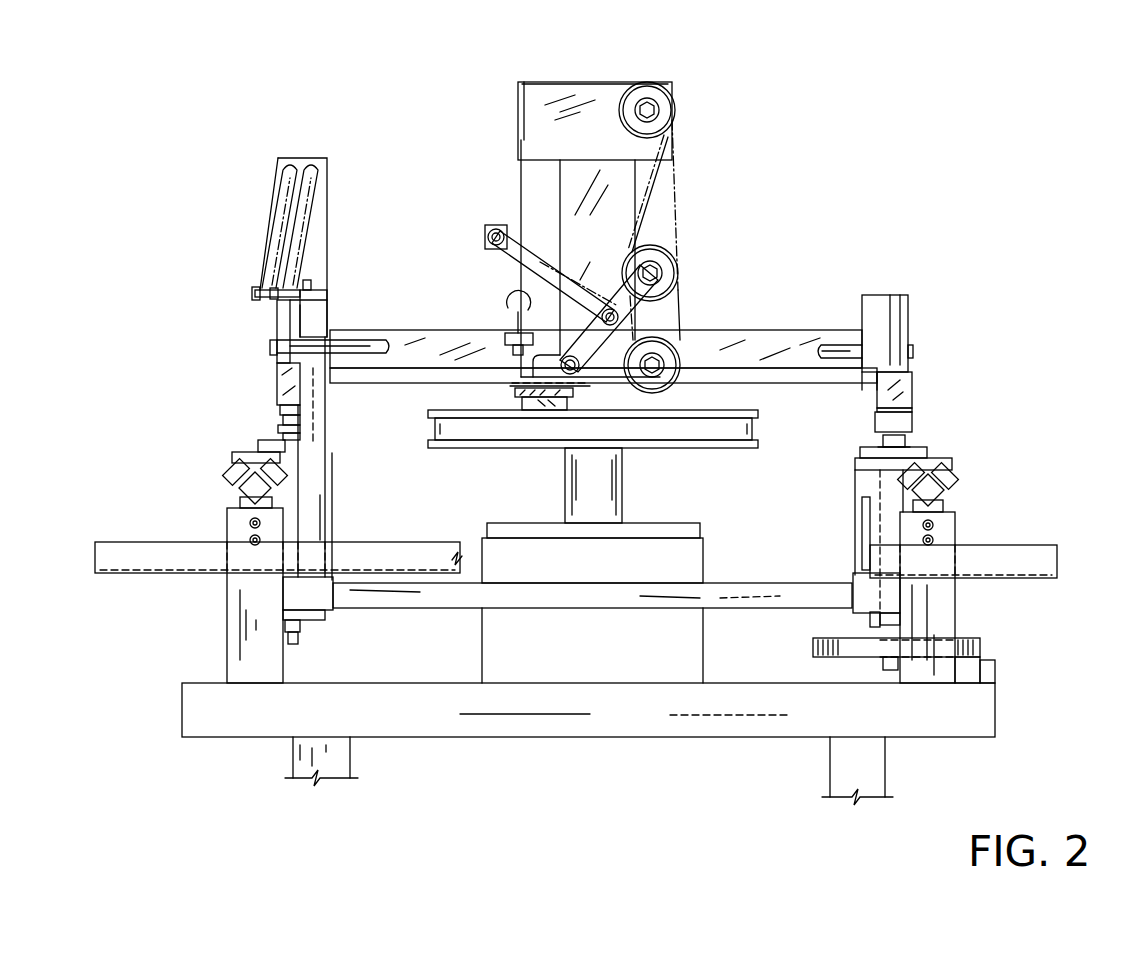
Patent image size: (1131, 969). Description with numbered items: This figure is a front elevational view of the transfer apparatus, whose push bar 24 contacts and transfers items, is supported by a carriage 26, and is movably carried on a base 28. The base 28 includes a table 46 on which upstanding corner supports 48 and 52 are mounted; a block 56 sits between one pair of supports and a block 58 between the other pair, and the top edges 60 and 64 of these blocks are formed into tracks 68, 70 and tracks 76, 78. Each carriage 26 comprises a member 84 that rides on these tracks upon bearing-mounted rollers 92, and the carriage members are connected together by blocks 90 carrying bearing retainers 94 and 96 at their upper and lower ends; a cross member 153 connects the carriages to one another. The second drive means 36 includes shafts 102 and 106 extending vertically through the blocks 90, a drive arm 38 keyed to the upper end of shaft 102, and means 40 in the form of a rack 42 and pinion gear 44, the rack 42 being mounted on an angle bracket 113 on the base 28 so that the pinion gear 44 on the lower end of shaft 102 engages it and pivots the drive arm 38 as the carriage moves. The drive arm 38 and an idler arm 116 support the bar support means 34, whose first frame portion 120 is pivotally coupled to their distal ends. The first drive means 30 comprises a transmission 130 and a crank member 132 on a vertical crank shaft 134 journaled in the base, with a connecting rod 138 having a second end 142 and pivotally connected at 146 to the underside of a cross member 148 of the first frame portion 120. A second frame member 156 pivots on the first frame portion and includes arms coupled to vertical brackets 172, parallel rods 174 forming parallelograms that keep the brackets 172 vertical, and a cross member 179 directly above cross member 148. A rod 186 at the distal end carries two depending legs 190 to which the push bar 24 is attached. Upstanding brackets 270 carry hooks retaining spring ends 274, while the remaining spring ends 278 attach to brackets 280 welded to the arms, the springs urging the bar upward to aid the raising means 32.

The push bar 24 is at (160, 563).
The carriage 26 is at (352, 500).
The base 28 is at (372, 670).
The first drive means 30 is at (660, 478).
The raising means 32 is at (700, 113).
The bar support means 34 is at (1070, 436).
The second drive means 36 is at (775, 549).
The drive arm 38 is at (880, 420).
The driving means 40 is at (785, 662).
The rack 42 is at (968, 648).
The pinion gear 44 is at (858, 655).
The table 46 is at (445, 683).
The corner support 48 is at (945, 530).
The corner support 52 is at (240, 638).
The block 56 is at (950, 505).
The block 58 is at (238, 505).
The top edge 60 is at (985, 458).
The top edge 64 is at (205, 470).
The track 68 is at (955, 485).
The track 70 is at (900, 478).
The track 76 is at (290, 475).
The track 78 is at (242, 490).
The member 84 is at (245, 455).
The block 90 is at (333, 527).
The roller 92 is at (232, 465).
The bearing retainer 94 is at (282, 440).
The bearing retainer 96 is at (308, 622).
The shaft 102 is at (885, 440).
The shaft 106 is at (284, 432).
The angle bracket 113 is at (985, 640).
The idler arm 116 is at (292, 420).
The first frame portion 120 is at (930, 368).
The transmission 130 is at (563, 573).
The crank member 132 is at (548, 460).
The crank shaft 134 is at (588, 490).
The connecting rod 138 is at (500, 398).
The second end 142 is at (590, 392).
The pivotal connection 146 is at (522, 345).
The cross member 148 is at (428, 365).
The cross member 153 is at (610, 597).
The second frame member 156 is at (708, 275).
The bracket 172 is at (262, 320).
The rod 174 is at (325, 305).
The cross member 179 is at (735, 355).
The rod 186 is at (352, 346).
The depending leg 190 is at (315, 480).
The upstanding bracket 270 is at (317, 158).
The spring end 274 is at (278, 192).
The spring end 278 is at (258, 292).
The bracket 280 is at (318, 288).